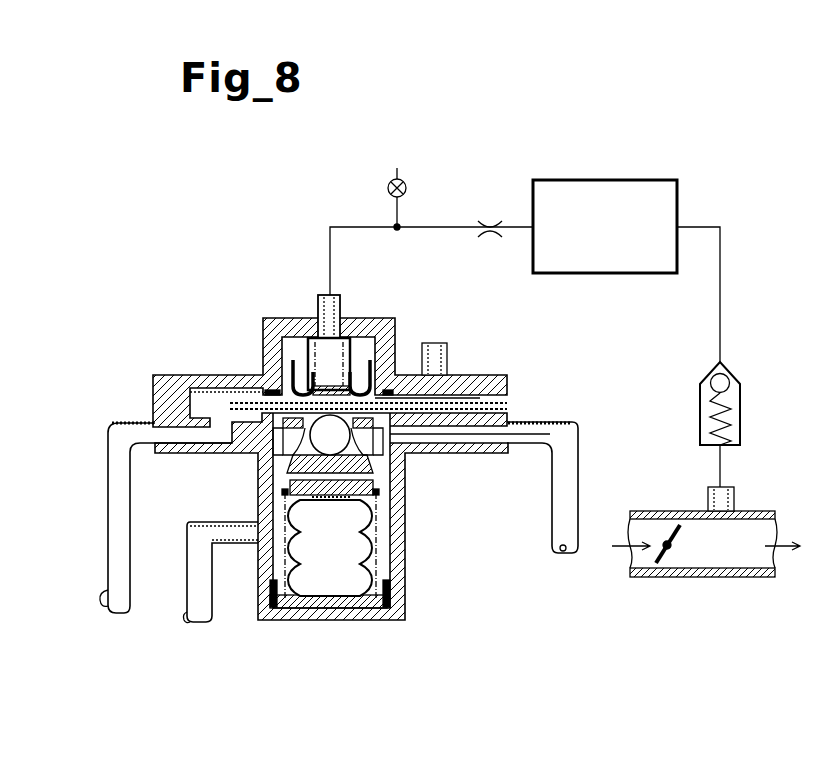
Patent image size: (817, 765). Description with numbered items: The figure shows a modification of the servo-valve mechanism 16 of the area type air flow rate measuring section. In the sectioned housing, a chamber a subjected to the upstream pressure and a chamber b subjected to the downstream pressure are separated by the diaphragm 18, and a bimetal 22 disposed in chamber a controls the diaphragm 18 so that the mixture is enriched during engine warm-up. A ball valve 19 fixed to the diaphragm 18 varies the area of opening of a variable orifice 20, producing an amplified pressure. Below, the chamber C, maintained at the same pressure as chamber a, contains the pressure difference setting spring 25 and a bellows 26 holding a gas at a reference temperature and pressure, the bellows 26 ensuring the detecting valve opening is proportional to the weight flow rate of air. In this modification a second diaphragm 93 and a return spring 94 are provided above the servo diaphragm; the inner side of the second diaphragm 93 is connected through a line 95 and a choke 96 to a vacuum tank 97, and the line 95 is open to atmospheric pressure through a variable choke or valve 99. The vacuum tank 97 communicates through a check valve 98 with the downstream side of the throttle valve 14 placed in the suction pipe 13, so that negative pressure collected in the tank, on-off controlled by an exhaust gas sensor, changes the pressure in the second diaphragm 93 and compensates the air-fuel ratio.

The suction pipe 13 is at (715, 578).
The throttle valve 14 is at (670, 565).
The servo-valve mechanism 16 is at (195, 295).
The diaphragm 18 is at (465, 403).
The ball valve 19 is at (287, 463).
The variable orifice 20 is at (373, 468).
The bimetal 22 is at (208, 395).
The pressure difference setting spring 25 is at (378, 522).
The bellows 26 is at (355, 547).
The second diaphragm 93 is at (350, 352).
The return spring 94 is at (367, 318).
The line 95 is at (330, 246).
The choke 96 is at (490, 221).
The vacuum tank 97 is at (588, 187).
The check valve 98 is at (743, 395).
The variable choke or valve 99 is at (404, 186).
The chamber a is at (447, 398).
The chamber b is at (505, 428).
The chamber c C is at (368, 567).